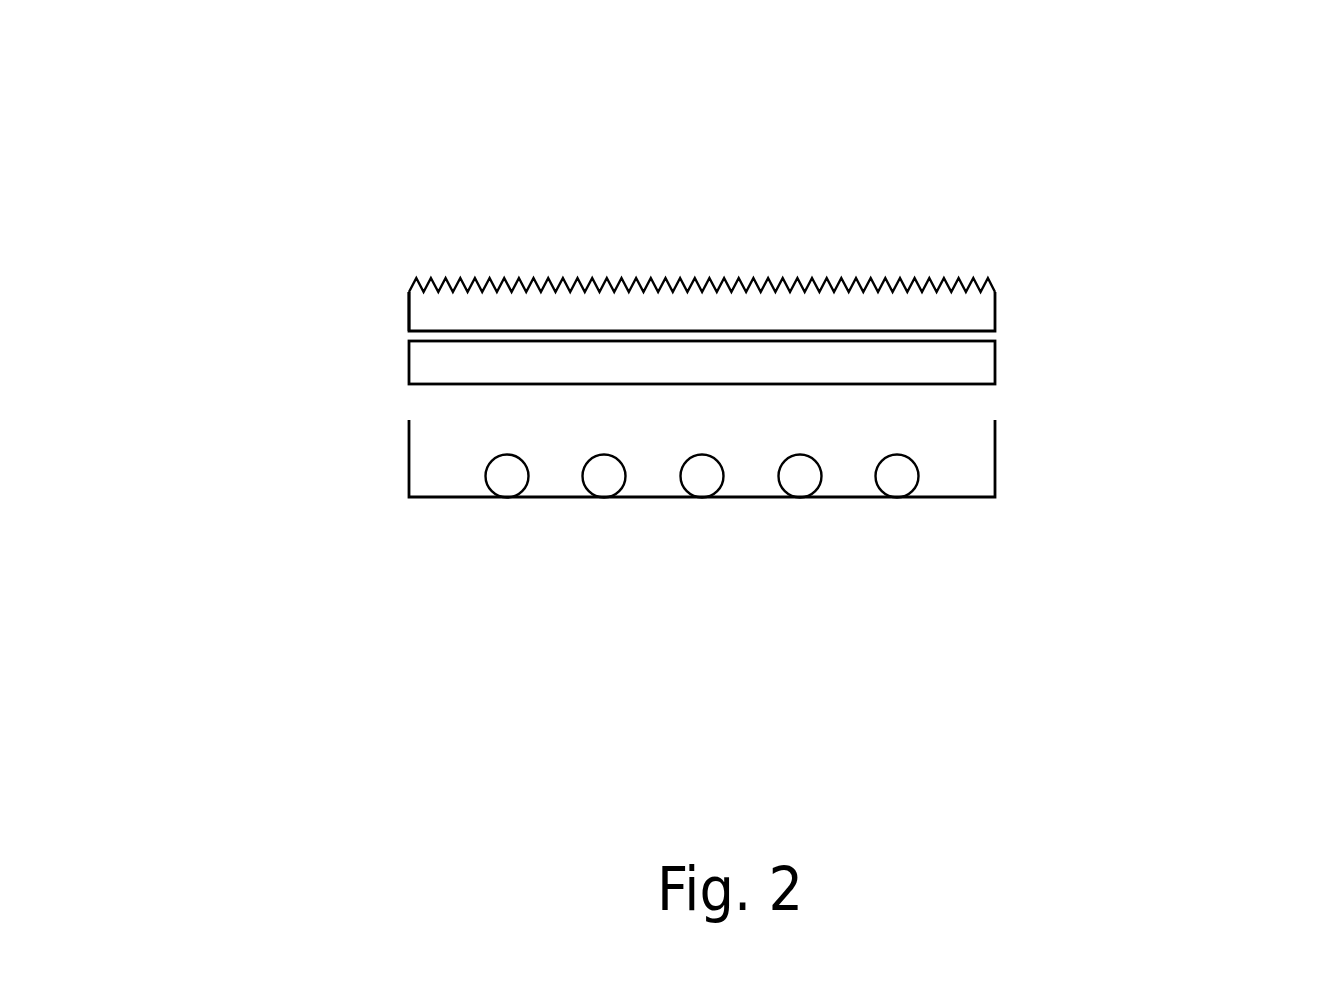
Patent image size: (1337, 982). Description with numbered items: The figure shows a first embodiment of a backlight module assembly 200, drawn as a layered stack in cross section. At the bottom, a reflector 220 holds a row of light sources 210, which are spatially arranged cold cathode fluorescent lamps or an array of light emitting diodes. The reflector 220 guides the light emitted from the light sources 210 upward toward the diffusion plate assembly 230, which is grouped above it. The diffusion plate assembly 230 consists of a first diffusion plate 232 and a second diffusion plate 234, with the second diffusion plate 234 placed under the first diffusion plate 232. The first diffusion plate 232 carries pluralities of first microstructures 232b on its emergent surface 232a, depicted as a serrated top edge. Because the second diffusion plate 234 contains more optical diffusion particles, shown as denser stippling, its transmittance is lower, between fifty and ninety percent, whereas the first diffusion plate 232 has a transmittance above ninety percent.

The backlight module assembly 200 is at (1137, 717).
The light sources 210 is at (798, 476).
The reflector 220 is at (995, 458).
The diffusion plate assembly 230 is at (751, 222).
The first diffusion plate 232 is at (676, 187).
The emergent surface 232a is at (488, 268).
The first microstructures 232b is at (413, 284).
The second diffusion plate 234 is at (995, 353).